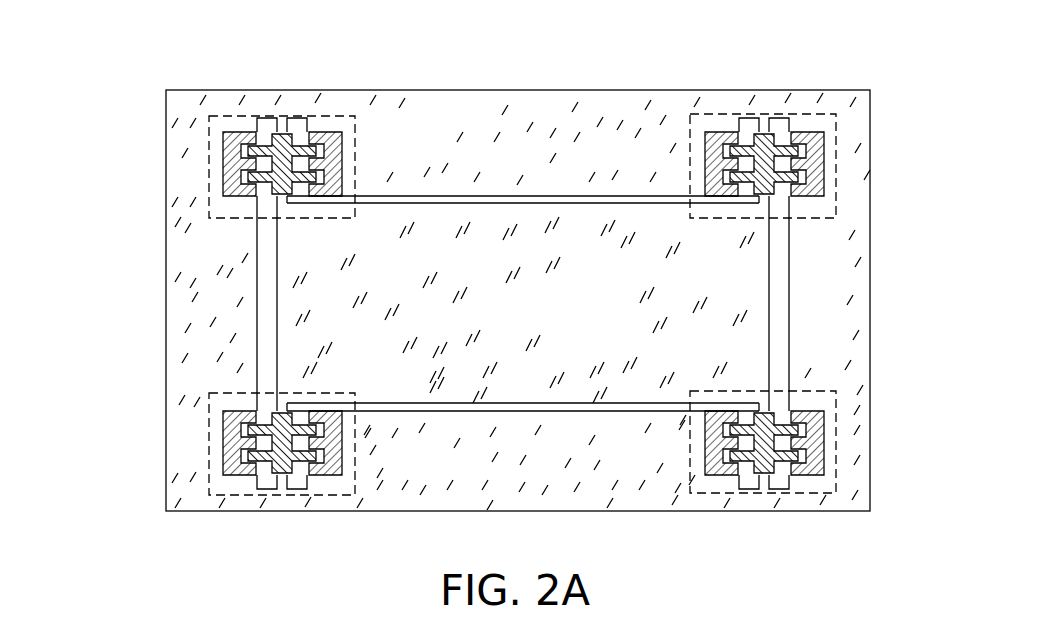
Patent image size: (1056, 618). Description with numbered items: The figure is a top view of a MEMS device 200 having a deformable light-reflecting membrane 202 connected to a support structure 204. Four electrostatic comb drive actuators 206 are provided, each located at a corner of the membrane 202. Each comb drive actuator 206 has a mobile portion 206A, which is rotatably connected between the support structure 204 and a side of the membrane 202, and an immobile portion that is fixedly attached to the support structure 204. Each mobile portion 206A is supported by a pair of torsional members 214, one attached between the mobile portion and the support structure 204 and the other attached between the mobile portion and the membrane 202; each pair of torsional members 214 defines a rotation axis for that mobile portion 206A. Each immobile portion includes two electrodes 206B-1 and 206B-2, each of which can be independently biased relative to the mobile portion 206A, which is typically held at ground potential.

The MEMS device 200 is at (522, 318).
The deformable light-reflecting membrane 202 is at (557, 325).
The support structure 204 is at (862, 166).
The electrostatic comb drive actuator 206 is at (228, 108).
The mobile portion 206A is at (268, 196).
The electrode 206B-1 is at (340, 160).
The electrode 206B-2 is at (225, 158).
The torsional member 214 is at (284, 118).